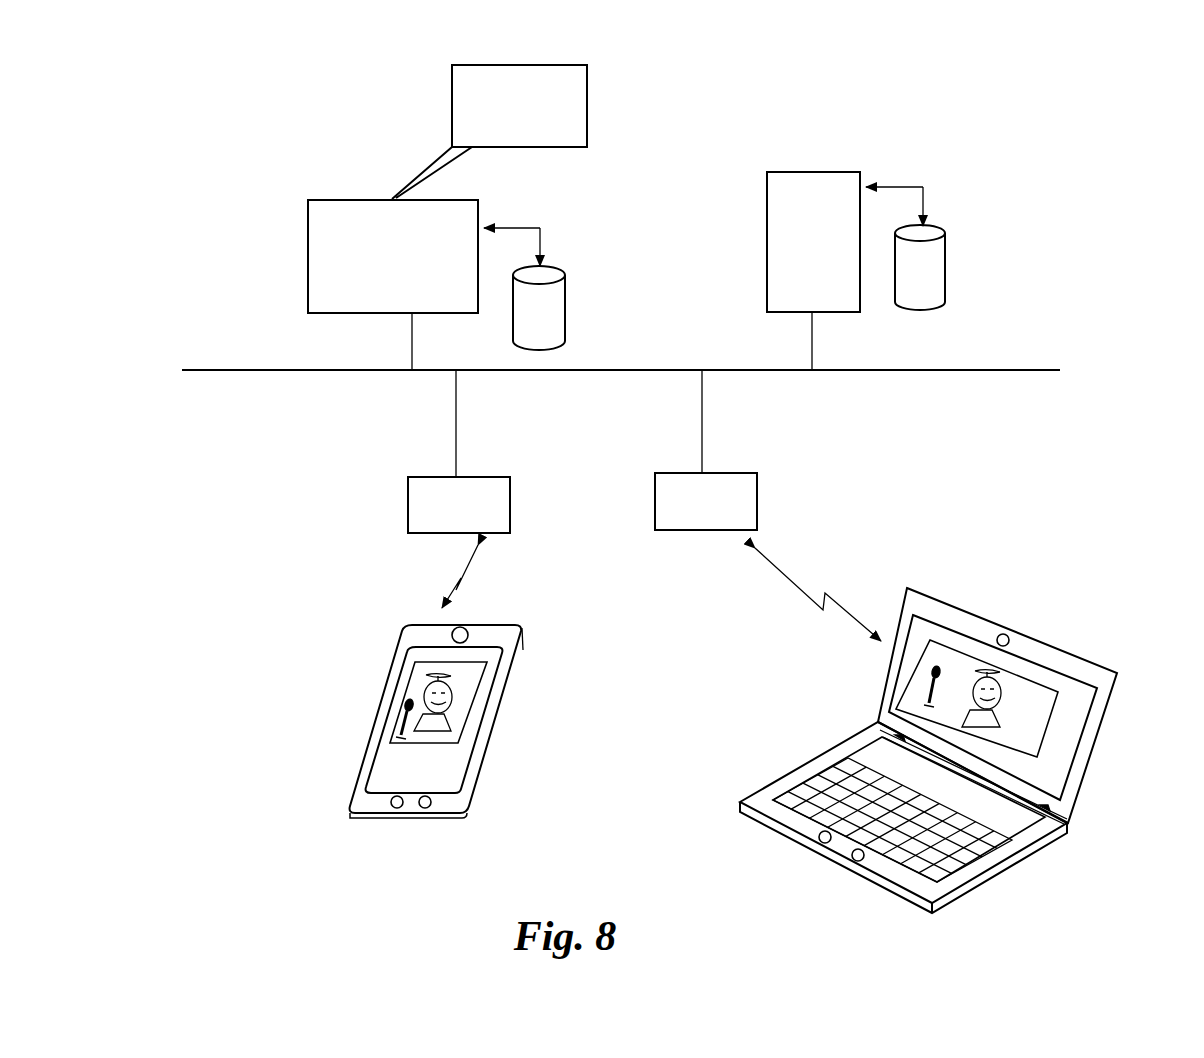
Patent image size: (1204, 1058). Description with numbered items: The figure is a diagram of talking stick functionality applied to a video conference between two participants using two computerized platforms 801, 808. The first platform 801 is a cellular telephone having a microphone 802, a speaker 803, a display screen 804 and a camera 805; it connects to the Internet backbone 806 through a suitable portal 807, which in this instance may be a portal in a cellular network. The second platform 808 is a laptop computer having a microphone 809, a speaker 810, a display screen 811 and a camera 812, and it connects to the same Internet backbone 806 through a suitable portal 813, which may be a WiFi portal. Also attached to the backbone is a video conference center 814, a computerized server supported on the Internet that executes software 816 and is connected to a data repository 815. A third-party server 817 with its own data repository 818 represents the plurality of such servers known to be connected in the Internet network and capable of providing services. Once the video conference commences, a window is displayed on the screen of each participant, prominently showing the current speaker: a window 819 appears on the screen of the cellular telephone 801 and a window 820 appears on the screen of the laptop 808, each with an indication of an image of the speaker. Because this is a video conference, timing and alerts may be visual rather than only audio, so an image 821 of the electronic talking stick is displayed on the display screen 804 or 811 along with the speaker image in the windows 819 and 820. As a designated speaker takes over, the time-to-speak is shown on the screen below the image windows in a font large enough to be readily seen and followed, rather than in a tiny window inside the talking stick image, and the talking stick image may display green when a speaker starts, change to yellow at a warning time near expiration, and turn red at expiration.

The platform 801 is at (385, 640).
The microphone 802 is at (390, 802).
The speaker 803 is at (431, 798).
The display screen 804 is at (453, 770).
The camera 805 is at (468, 633).
The Internet backbone 806 is at (613, 373).
The portal 807 is at (406, 505).
The platform 808 is at (755, 757).
The microphone 809 is at (820, 835).
The speaker 810 is at (851, 853).
The display screen 811 is at (920, 628).
The camera 812 is at (1005, 632).
The portal 813 is at (653, 518).
The video conference center 814 is at (353, 200).
The data repository 815 is at (565, 303).
The software 816 is at (452, 108).
The third-party server 817 is at (767, 220).
The data repository 818 is at (940, 225).
The window 819 is at (460, 705).
The window 820 is at (1028, 733).
The image of the electronic talking stick 821 is at (405, 723).